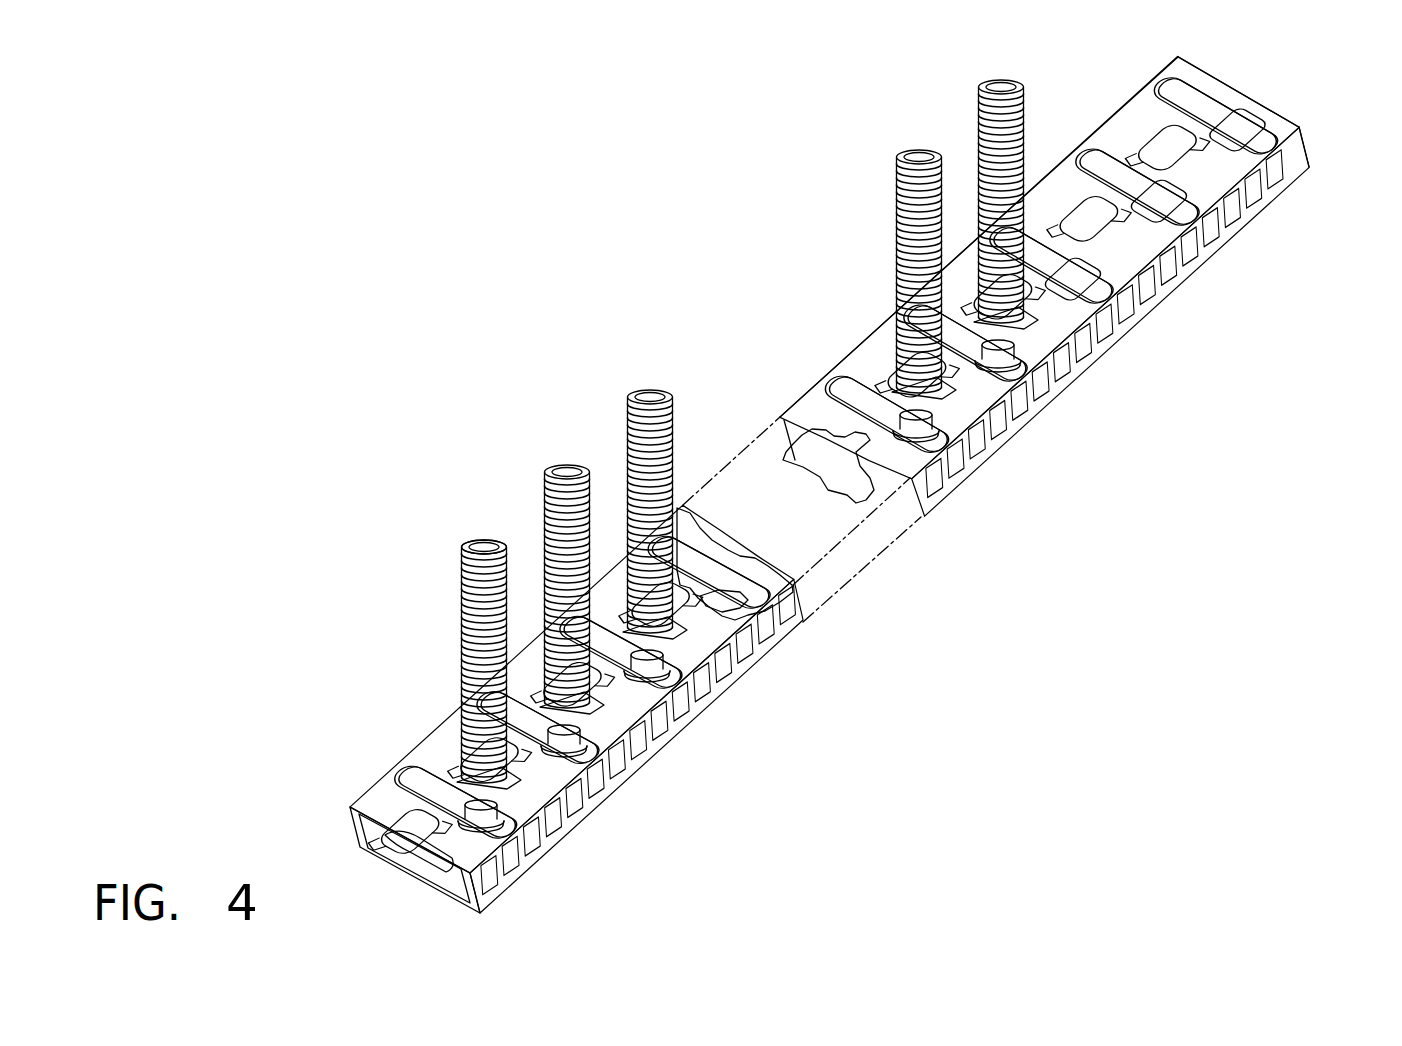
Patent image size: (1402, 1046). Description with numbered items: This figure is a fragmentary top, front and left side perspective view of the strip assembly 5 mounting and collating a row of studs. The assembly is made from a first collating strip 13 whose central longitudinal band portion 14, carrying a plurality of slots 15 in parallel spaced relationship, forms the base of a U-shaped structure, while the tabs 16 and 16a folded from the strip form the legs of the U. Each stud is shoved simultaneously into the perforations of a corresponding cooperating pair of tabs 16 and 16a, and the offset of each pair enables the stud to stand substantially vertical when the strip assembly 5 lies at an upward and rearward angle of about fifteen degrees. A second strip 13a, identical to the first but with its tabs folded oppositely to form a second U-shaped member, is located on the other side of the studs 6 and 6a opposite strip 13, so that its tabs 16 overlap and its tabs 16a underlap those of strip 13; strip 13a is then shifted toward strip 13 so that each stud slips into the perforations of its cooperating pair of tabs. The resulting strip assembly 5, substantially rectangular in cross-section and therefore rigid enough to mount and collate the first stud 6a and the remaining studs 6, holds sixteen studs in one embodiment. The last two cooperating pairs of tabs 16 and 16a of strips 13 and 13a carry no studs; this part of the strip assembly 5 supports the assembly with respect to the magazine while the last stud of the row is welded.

The strip assembly 5 is at (960, 486).
The studs 6 is at (1000, 85).
The first stud 6a is at (482, 545).
The collating strip 13 is at (1038, 420).
The second strip 13a is at (862, 343).
The central longitudinal band portion 14 is at (1298, 150).
The slots 15 is at (1180, 273).
The tabs 16 is at (1128, 122).
The tabs 16a is at (1118, 172).